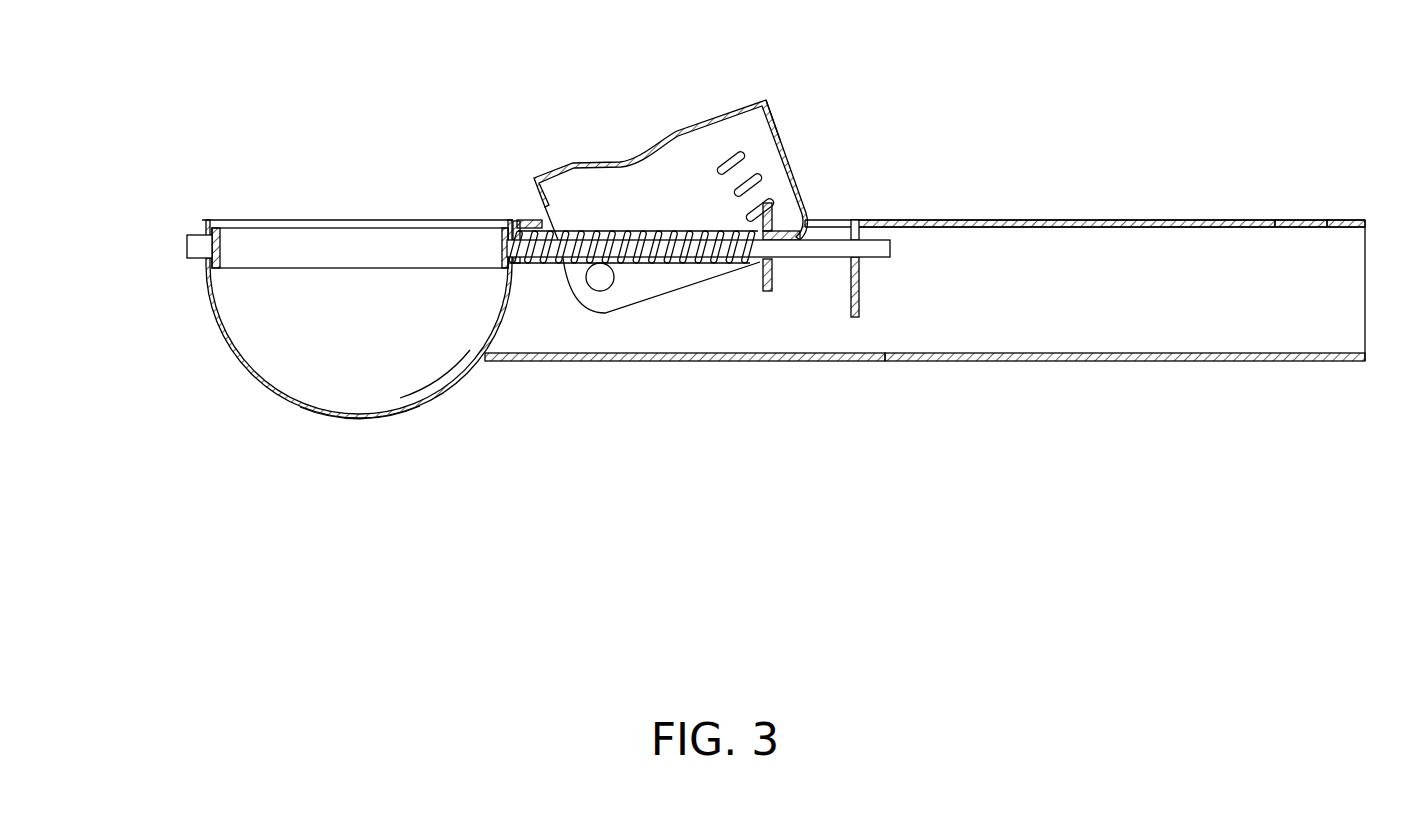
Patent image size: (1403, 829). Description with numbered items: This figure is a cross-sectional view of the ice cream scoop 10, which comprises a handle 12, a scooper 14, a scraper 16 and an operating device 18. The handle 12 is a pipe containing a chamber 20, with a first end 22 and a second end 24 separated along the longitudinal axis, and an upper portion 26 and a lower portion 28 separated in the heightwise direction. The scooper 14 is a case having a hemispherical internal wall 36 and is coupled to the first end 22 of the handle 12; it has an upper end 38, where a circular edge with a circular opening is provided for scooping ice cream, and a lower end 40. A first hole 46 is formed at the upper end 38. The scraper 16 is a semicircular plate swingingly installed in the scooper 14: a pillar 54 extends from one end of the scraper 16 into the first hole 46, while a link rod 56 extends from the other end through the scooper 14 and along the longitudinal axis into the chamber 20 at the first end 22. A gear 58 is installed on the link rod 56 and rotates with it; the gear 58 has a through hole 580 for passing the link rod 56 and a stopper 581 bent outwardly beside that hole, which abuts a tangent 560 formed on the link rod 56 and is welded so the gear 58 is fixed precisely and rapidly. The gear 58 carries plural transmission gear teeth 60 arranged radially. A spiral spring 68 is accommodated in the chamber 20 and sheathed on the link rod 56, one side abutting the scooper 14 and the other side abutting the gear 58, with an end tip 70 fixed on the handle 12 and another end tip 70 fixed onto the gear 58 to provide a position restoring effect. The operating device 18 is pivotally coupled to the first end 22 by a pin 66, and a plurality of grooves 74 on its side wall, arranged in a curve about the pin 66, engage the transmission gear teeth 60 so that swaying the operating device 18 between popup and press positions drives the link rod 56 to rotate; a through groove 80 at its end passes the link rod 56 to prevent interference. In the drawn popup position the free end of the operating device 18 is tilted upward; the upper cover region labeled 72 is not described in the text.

The ice cream scoop 10 is at (993, 214).
The handle 12 is at (1152, 219).
The scooper 14 is at (243, 366).
The scraper 16 is at (310, 242).
The operating device 18 is at (624, 165).
The chamber 20 is at (706, 342).
The first end 22 is at (543, 362).
The second end 24 is at (1335, 362).
The upper portion 26 is at (1222, 219).
The lower portion 28 is at (1010, 362).
The hemispherical internal wall 36 is at (420, 378).
The upper end 38 is at (204, 222).
The lower end 40 is at (325, 420).
The first hole 46 is at (208, 258).
The pillar 54 is at (189, 246).
The link rod 56 is at (549, 263).
The gear 58 is at (764, 284).
The transmission gear teeth 60 is at (773, 221).
The pin 66 is at (600, 291).
The spiral spring 68 is at (665, 263).
The end tip 70 is at (520, 222).
The lever cover 72 is at (712, 122).
The grooves 74 is at (759, 176).
The through groove 80 is at (775, 121).
The tangent 560 is at (883, 247).
The through hole 580 is at (773, 259).
The stopper 581 is at (798, 243).